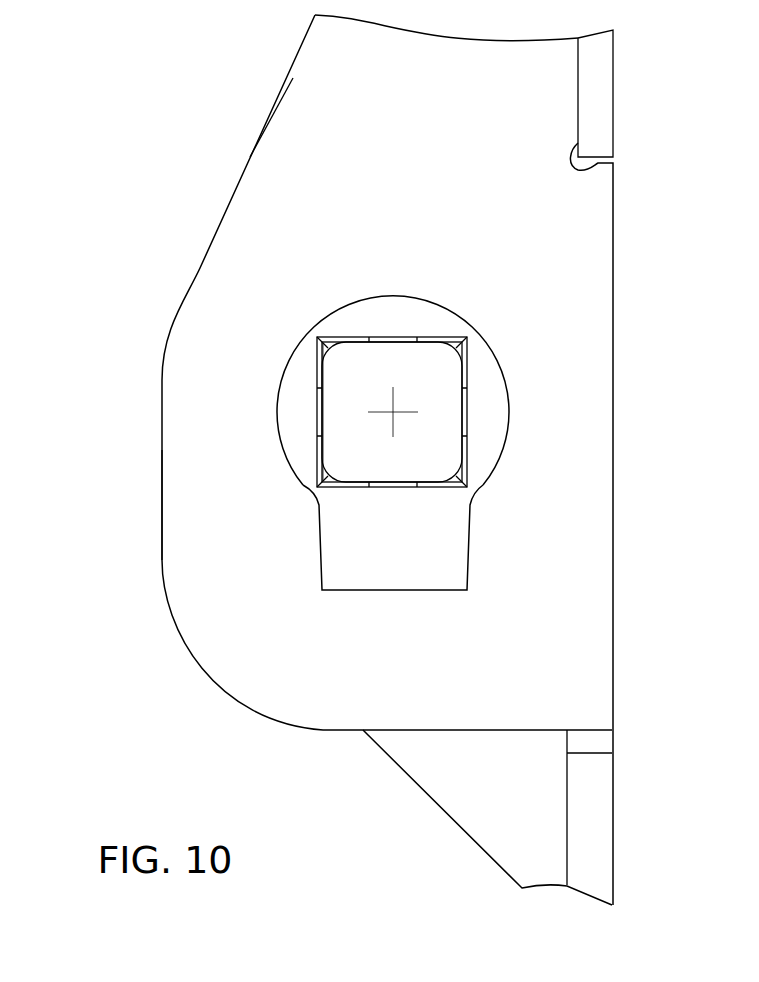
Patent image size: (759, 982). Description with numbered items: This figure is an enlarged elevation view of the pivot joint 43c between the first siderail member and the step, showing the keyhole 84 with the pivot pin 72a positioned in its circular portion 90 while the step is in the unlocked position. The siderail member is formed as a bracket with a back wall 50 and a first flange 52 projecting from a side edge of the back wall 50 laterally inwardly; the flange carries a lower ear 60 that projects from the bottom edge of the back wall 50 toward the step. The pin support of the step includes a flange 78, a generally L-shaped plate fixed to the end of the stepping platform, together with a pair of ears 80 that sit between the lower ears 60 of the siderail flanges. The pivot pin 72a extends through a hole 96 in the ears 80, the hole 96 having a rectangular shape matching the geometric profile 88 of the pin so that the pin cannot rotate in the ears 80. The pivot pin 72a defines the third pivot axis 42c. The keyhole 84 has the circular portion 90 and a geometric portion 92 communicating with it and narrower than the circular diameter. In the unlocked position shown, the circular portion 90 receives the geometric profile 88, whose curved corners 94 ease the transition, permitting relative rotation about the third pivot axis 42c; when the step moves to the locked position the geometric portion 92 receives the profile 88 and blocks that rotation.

The pivot joint 43c is at (173, 272).
The back wall 50 is at (613, 92).
The first flange 52 is at (308, 88).
The lower ear 60 is at (212, 625).
The pivot pin 72a is at (406, 343).
The flange 78 is at (613, 838).
The ears 80 is at (447, 812).
The keyhole 84 is at (372, 297).
The geometric profile 88 is at (368, 487).
The circular portion 90 is at (501, 432).
The geometric portion 92 is at (363, 590).
The curved corners 94 is at (318, 343).
The hole 96 is at (430, 485).
The third pivot axis 42c is at (392, 412).